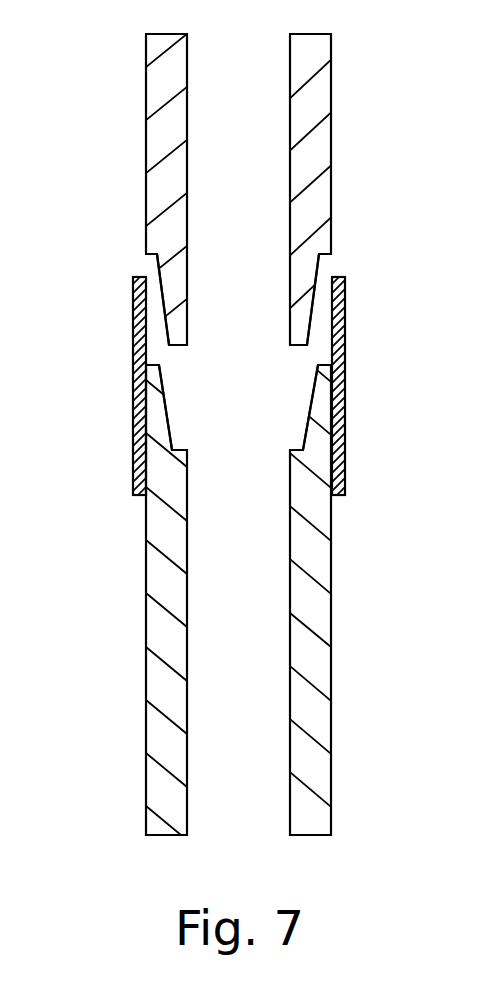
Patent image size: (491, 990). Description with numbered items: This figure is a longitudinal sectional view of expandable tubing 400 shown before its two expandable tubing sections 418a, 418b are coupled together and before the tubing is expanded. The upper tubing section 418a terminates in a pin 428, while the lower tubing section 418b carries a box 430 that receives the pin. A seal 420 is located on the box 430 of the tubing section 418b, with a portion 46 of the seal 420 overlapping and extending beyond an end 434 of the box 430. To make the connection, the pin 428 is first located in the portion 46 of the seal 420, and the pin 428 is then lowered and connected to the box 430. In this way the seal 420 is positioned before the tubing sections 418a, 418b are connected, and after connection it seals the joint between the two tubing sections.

The expandable tubing 400 is at (107, 142).
The expandable tubing section 418a is at (187, 88).
The expandable tubing section 418b is at (188, 643).
The pin 428 is at (175, 281).
The box 430 is at (188, 500).
The end of the box 434 is at (323, 367).
The seal 420 is at (132, 432).
The portion of the seal 46 is at (347, 338).